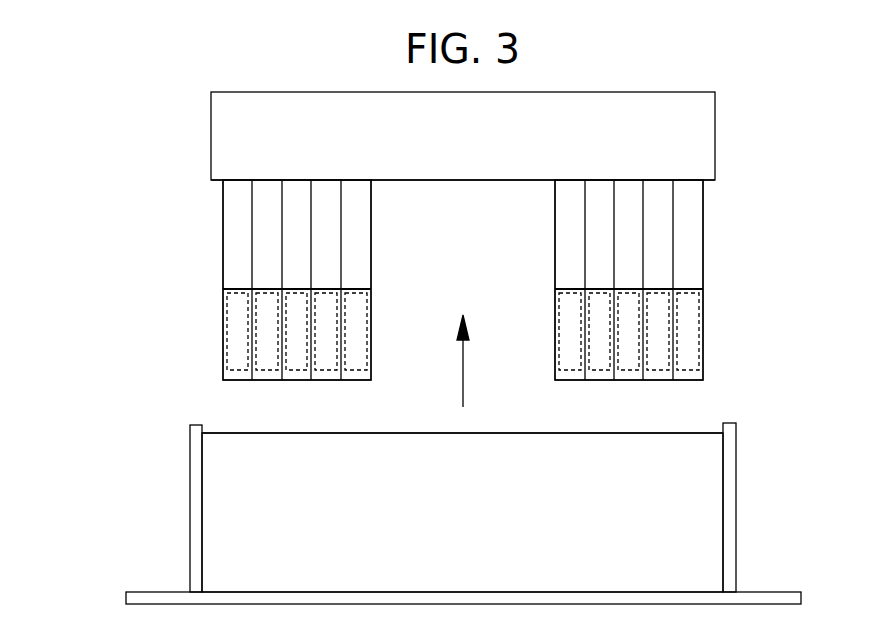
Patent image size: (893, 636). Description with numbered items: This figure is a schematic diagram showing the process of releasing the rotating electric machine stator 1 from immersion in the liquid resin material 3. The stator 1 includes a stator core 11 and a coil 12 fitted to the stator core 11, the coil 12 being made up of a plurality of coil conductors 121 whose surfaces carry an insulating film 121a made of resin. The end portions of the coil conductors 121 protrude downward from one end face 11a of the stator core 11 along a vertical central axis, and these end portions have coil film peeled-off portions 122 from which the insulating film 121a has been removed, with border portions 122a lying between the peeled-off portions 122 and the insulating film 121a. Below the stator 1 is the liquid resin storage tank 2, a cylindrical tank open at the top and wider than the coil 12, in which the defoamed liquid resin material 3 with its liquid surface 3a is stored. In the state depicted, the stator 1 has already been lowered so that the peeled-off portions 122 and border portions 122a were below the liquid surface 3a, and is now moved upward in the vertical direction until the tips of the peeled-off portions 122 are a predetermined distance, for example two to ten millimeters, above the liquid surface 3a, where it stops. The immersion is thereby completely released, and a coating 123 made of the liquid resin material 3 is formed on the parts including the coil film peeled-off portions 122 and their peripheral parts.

The rotating electric machine stator 1 is at (120, 177).
The stator core 11 is at (733, 130).
The end face of the stator core 11a is at (214, 187).
The coil 12 is at (721, 212).
The coil conductors 121 is at (232, 273).
The insulating film 121a is at (463, 234).
The coil film peeled-off portions 122 is at (224, 338).
The border portions 122a is at (224, 299).
The coating 123 is at (207, 354).
The liquid resin storage tank 2 is at (757, 513).
The liquid resin material 3 is at (232, 421).
The liquid surface 3a is at (653, 432).